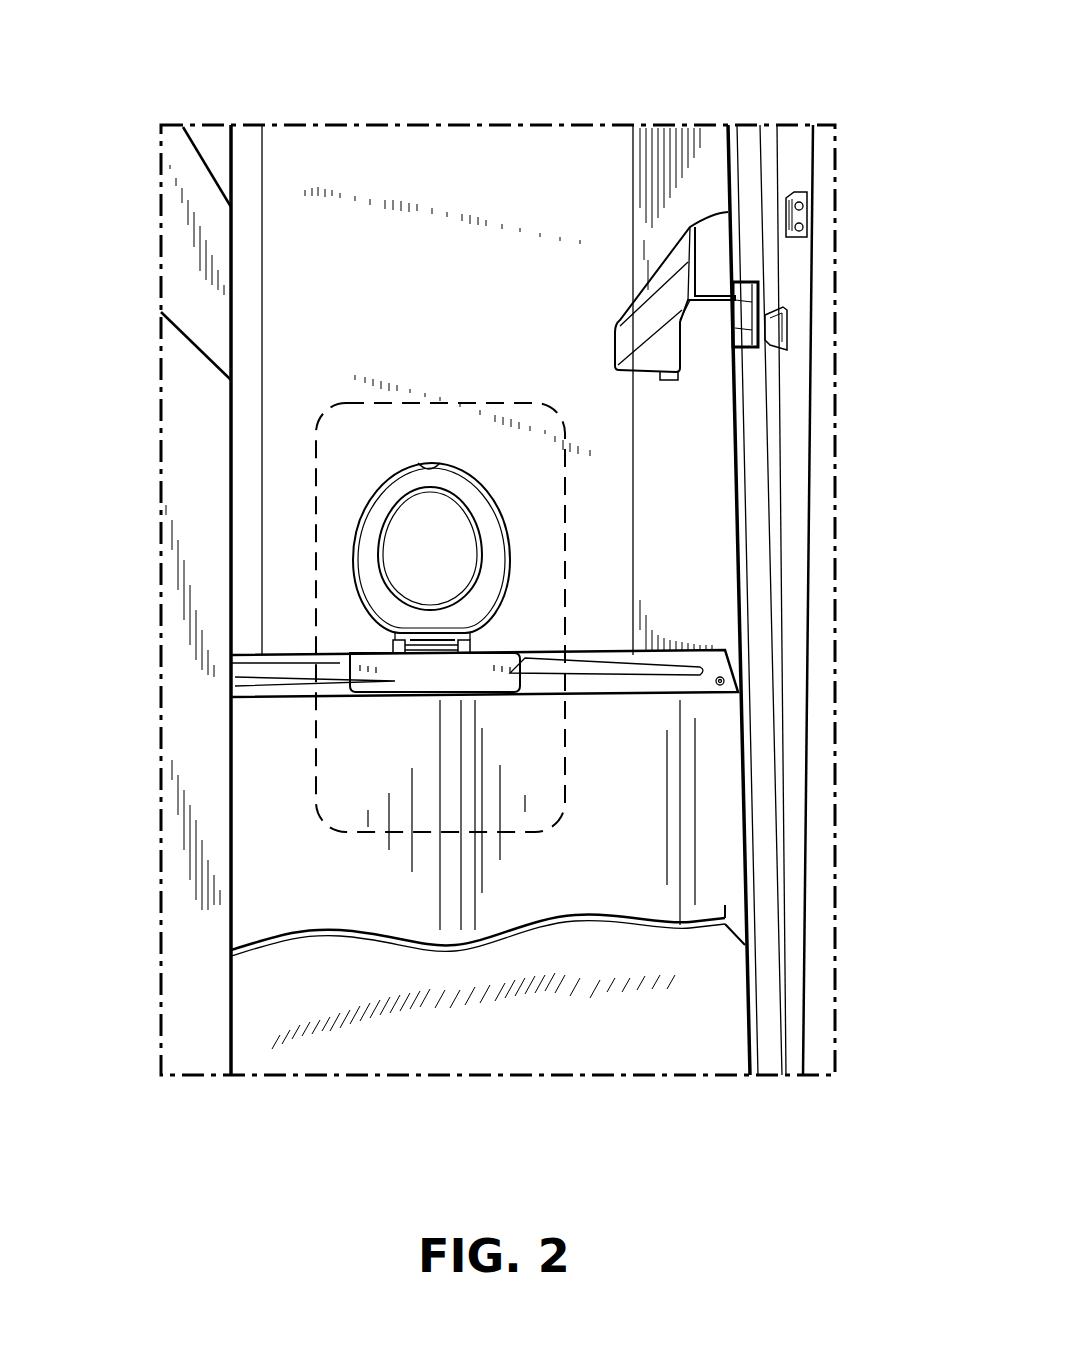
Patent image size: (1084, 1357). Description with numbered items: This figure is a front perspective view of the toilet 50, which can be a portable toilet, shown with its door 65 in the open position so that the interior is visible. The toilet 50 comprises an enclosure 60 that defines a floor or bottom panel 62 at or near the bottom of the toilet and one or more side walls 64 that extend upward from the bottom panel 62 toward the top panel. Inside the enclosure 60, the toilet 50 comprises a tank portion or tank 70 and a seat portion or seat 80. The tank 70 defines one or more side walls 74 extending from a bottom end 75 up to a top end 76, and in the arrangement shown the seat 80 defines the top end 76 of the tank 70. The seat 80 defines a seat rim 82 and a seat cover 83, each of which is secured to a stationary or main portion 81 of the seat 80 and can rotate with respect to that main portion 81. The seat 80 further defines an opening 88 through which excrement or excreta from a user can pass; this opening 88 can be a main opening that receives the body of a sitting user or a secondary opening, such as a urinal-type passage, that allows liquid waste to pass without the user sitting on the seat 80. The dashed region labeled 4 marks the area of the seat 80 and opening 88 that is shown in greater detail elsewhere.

The toilet 50 is at (243, 86).
The side wall 64 is at (540, 326).
The door 65 is at (178, 954).
The bottom panel 62 is at (606, 1035).
The bottom end 75 is at (403, 925).
The tank 70 is at (812, 600).
The side wall 74 is at (692, 773).
The enclosure 60 is at (700, 537).
The top end 76 is at (622, 655).
The seat 80 is at (427, 701).
The main portion 81 is at (428, 683).
The seat rim 82 is at (400, 470).
The seat cover 83 is at (398, 553).
The opening 88 is at (435, 636).
The detail region of FIG. 4 is at (563, 758).